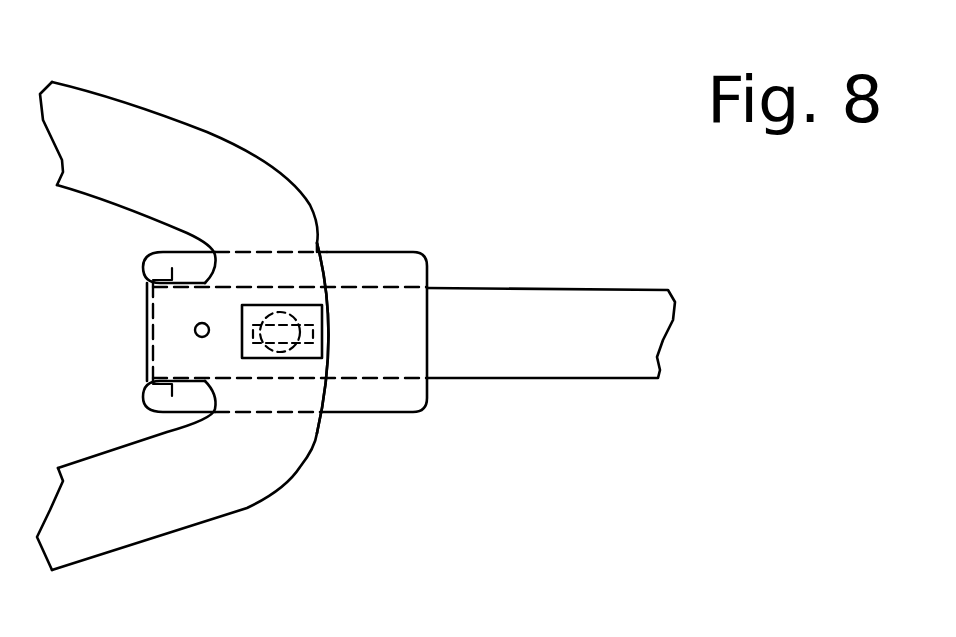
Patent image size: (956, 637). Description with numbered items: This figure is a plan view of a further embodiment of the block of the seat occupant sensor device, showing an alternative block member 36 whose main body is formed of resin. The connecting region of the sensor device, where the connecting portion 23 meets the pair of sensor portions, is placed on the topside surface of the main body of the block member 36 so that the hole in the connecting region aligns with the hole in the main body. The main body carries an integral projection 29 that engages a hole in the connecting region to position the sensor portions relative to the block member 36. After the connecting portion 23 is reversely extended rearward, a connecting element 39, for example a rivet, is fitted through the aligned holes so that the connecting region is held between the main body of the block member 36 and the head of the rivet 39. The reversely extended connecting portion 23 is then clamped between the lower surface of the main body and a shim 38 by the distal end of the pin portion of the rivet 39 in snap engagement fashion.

The connecting portion 23 is at (597, 307).
The projection 29 is at (195, 330).
The block member 36 is at (407, 262).
The shim 38 is at (313, 358).
The connecting element 39 is at (305, 305).